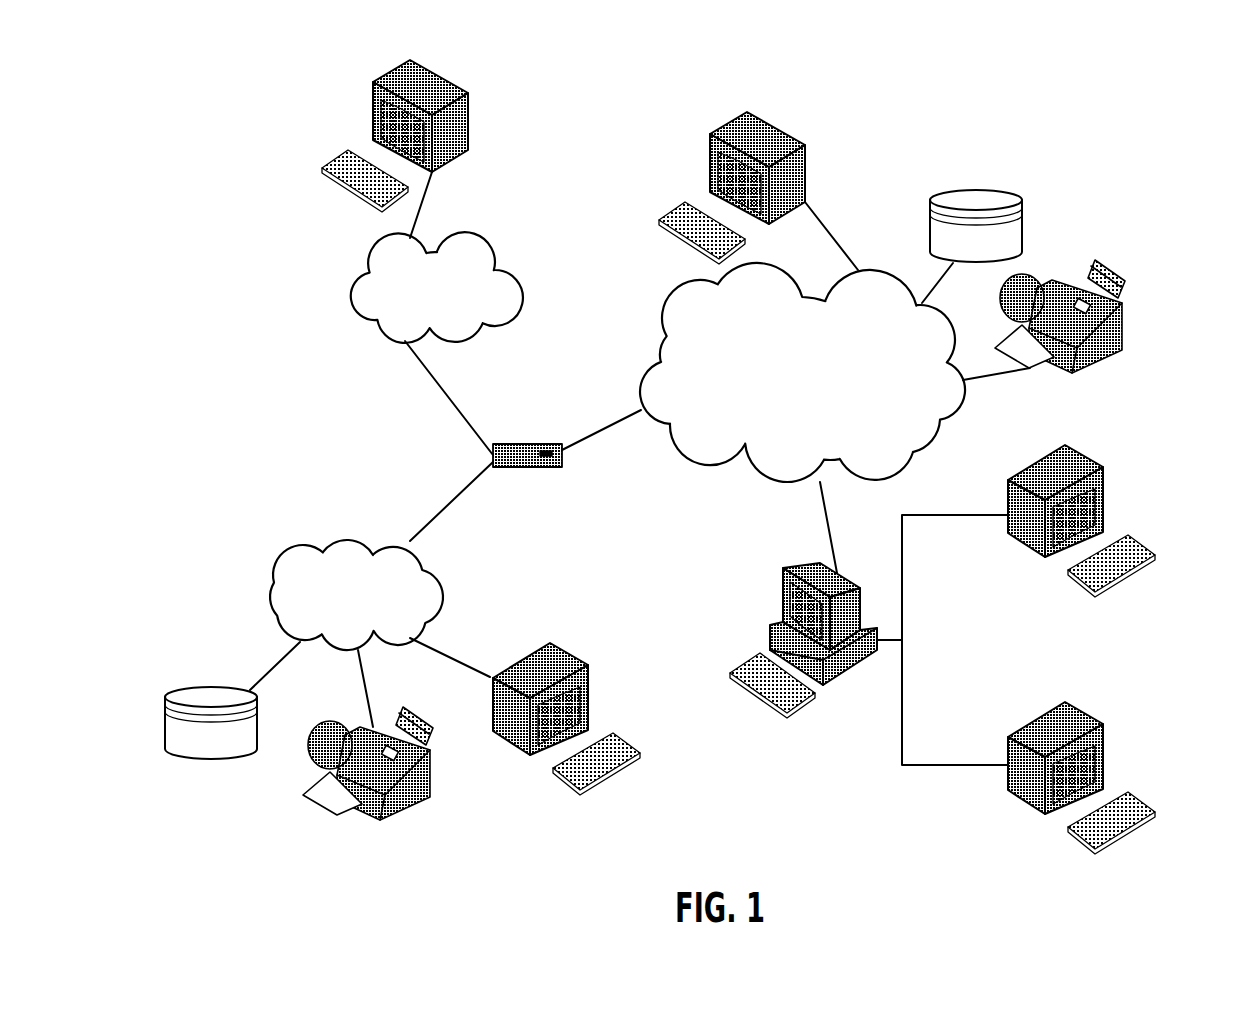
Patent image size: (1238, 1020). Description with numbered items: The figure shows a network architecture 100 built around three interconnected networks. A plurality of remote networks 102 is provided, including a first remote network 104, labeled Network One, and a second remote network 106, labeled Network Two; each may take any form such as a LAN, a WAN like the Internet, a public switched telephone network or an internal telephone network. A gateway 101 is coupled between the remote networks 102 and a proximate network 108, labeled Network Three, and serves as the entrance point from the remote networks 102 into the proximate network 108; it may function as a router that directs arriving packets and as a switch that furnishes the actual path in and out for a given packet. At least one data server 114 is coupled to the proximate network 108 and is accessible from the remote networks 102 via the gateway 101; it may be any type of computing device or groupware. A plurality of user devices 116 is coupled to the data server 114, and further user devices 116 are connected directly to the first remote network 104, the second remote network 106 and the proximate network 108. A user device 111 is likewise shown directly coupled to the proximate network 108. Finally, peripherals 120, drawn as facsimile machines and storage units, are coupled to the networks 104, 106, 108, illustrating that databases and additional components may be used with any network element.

The architecture 100 is at (726, 30).
The gateway 101 is at (527, 440).
The remote networks 102 is at (332, 374).
The first remote network 104 is at (273, 567).
The second remote network 106 is at (530, 295).
The proximate network 108 is at (926, 432).
The user device 111 is at (806, 181).
The data server 114 is at (780, 593).
The user devices 116 is at (470, 122).
The peripheral 120 is at (978, 190).